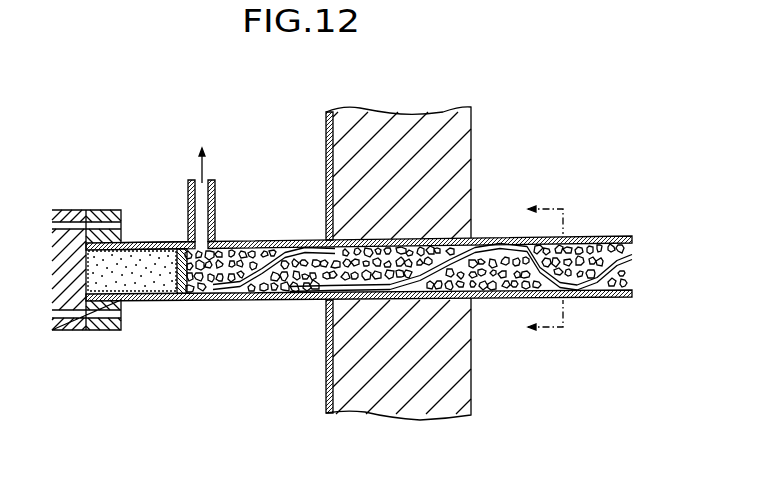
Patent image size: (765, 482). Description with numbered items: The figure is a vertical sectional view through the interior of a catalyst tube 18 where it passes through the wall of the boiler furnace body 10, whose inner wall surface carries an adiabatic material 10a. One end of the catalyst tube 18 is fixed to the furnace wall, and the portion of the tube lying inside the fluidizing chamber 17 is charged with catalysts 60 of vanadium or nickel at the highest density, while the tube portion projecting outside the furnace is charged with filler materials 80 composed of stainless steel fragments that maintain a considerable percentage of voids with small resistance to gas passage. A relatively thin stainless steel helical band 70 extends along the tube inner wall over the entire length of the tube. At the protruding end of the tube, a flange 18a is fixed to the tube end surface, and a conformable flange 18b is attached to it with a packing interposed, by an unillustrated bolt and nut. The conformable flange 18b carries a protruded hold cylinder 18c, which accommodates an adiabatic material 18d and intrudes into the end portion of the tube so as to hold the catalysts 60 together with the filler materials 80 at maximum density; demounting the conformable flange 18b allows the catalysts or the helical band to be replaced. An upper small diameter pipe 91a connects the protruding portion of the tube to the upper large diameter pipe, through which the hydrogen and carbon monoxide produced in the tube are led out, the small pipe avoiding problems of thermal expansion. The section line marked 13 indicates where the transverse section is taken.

The furnace body 10 is at (327, 135).
The adiabatic material 10a is at (462, 148).
The section line 13 is at (545, 270).
The fluidizing chamber 17 is at (614, 358).
The catalyst tube 18 is at (217, 301).
The flange 18a is at (103, 210).
The conformable flange 18b is at (68, 210).
The hold cylinder 18c is at (145, 241).
The adiabatic material 18d is at (153, 276).
The catalysts 60 is at (480, 296).
The helical band 70 is at (287, 254).
The filler materials 80 is at (297, 289).
The small diameter pipe 91a is at (216, 182).